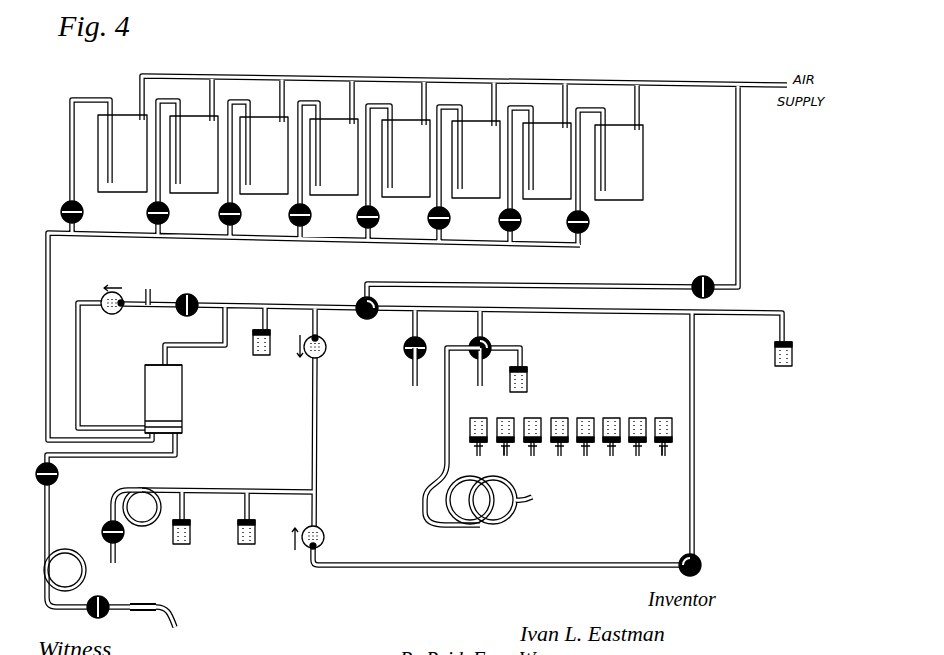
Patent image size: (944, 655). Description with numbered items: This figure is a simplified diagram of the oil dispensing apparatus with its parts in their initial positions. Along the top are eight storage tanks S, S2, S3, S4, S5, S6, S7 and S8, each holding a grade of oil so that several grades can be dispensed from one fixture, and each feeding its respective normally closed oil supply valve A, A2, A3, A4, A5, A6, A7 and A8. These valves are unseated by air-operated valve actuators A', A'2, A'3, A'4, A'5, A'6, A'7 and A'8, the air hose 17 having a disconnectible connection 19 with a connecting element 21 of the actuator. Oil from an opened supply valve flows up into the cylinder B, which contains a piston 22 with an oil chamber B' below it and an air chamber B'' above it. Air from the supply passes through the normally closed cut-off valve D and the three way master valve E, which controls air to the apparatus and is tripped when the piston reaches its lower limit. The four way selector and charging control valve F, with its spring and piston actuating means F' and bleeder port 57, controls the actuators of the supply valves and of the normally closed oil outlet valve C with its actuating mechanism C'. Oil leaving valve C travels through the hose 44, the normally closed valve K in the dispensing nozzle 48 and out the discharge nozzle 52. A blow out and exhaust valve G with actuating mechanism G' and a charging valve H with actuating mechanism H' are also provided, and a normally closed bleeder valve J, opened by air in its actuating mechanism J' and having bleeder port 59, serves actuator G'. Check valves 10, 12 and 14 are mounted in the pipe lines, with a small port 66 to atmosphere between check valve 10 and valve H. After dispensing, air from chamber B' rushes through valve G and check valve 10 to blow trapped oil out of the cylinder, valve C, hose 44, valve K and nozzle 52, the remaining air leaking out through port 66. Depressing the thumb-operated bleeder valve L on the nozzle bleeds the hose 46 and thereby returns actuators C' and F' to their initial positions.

The storage tank S is at (123, 118).
The storage tank S2 is at (195, 119).
The storage tank S3 is at (265, 120).
The storage tank S4 is at (335, 122).
The storage tank S5 is at (407, 123).
The storage tank S6 is at (477, 124).
The storage tank S7 is at (548, 126).
The storage tank S8 is at (620, 128).
The oil supply valve A is at (82, 212).
The oil supply valve A2 is at (170, 213).
The oil supply valve A3 is at (242, 214).
The oil supply valve A4 is at (312, 215).
The oil supply valve A5 is at (380, 217).
The oil supply valve A6 is at (451, 218).
The oil supply valve A7 is at (522, 220).
The oil supply valve A8 is at (590, 222).
The check valve 10 is at (113, 315).
The port to atmosphere 66 is at (152, 291).
The blow out and exhaust valve G is at (197, 299).
The cylinder B is at (174, 399).
The air chamber B'' is at (177, 374).
The oil chamber B' is at (175, 430).
The piston 22 is at (167, 424).
The actuating mechanism J' is at (262, 355).
The check valve 12 is at (324, 356).
The master valve E is at (377, 302).
The cut-off valve D is at (704, 276).
The actuating mechanism G' is at (789, 366).
The bleeder valve J is at (406, 348).
The bleeder port 59 is at (414, 388).
The selector and charging control valve F is at (490, 344).
The bleeder port 57 is at (479, 388).
The actuating mechanism H' is at (531, 379).
The air hose 17 is at (445, 423).
The disconnectible connection 19 is at (536, 500).
The valve actuator A' is at (467, 437).
The valve actuator A'2 is at (514, 426).
The valve actuator A'3 is at (539, 444).
The valve actuator A'4 is at (576, 426).
The valve actuator A'5 is at (592, 444).
The valve actuator A'6 is at (625, 426).
The valve actuator A'7 is at (644, 444).
The valve actuator A'8 is at (673, 426).
The connecting element 21 is at (506, 453).
The charging valve H is at (702, 565).
The hose 46 is at (148, 489).
The oil outlet valve C is at (56, 474).
The bleeder valve L is at (125, 533).
The actuating mechanism C' is at (185, 542).
The actuating means F' is at (249, 542).
The check valve 14 is at (325, 538).
The hose 44 is at (84, 578).
The valve K is at (106, 600).
The dispensing nozzle 48 is at (144, 602).
The discharge nozzle 52 is at (175, 627).